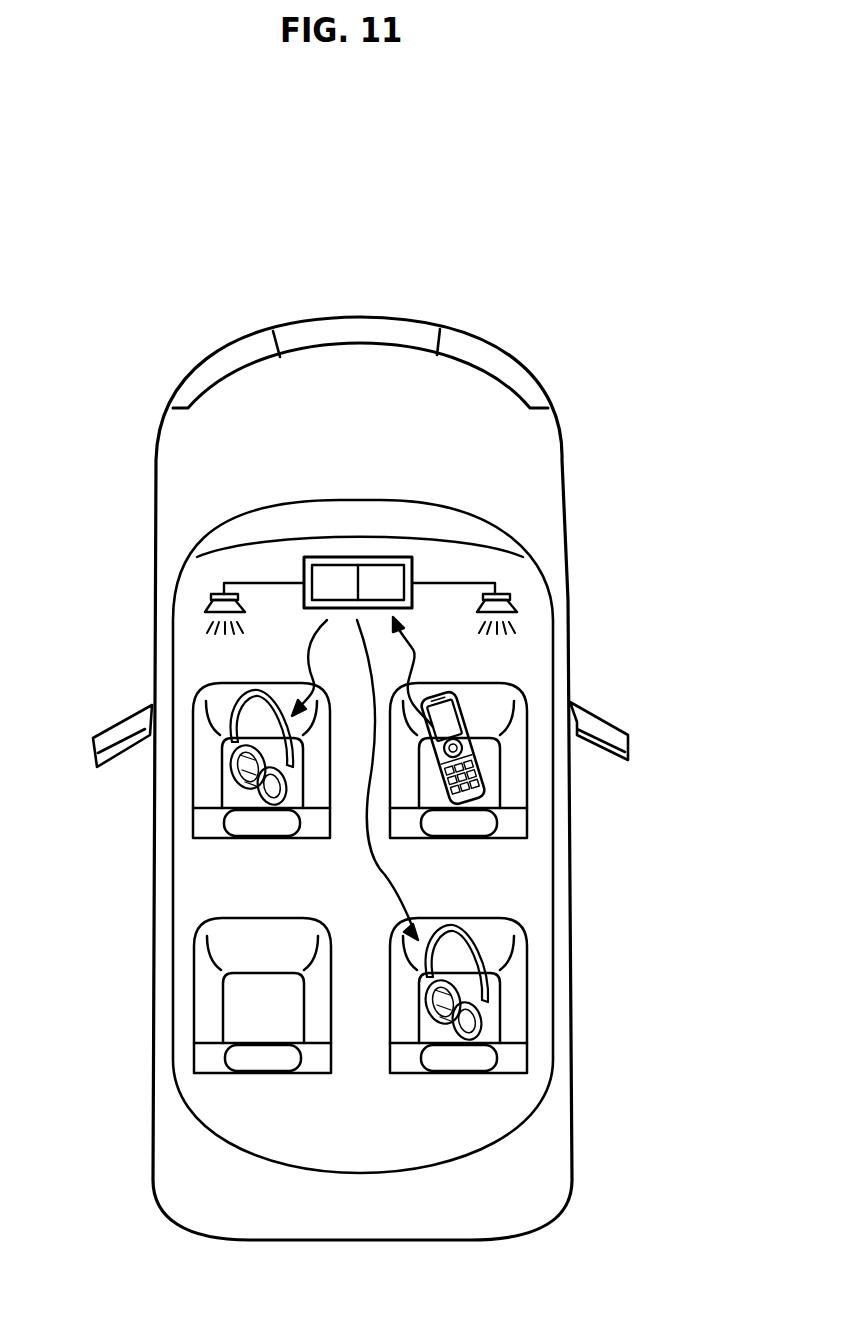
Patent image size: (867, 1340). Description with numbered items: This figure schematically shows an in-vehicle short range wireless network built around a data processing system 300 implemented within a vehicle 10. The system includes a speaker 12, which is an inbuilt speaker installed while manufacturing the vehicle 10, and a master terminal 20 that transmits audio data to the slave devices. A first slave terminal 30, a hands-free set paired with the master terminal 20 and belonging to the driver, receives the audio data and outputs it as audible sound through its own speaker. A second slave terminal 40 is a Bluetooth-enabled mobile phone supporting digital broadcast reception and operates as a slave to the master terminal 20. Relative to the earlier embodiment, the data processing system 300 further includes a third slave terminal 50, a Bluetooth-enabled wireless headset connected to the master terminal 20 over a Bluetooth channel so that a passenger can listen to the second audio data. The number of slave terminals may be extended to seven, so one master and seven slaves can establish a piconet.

The data processing system 300 is at (644, 341).
The vehicle 10 is at (568, 502).
The speaker 12 is at (517, 603).
The master terminal 20 is at (310, 557).
The first slave terminal 30 is at (240, 702).
The second slave terminal 40 is at (483, 698).
The third slave terminal 50 is at (485, 952).